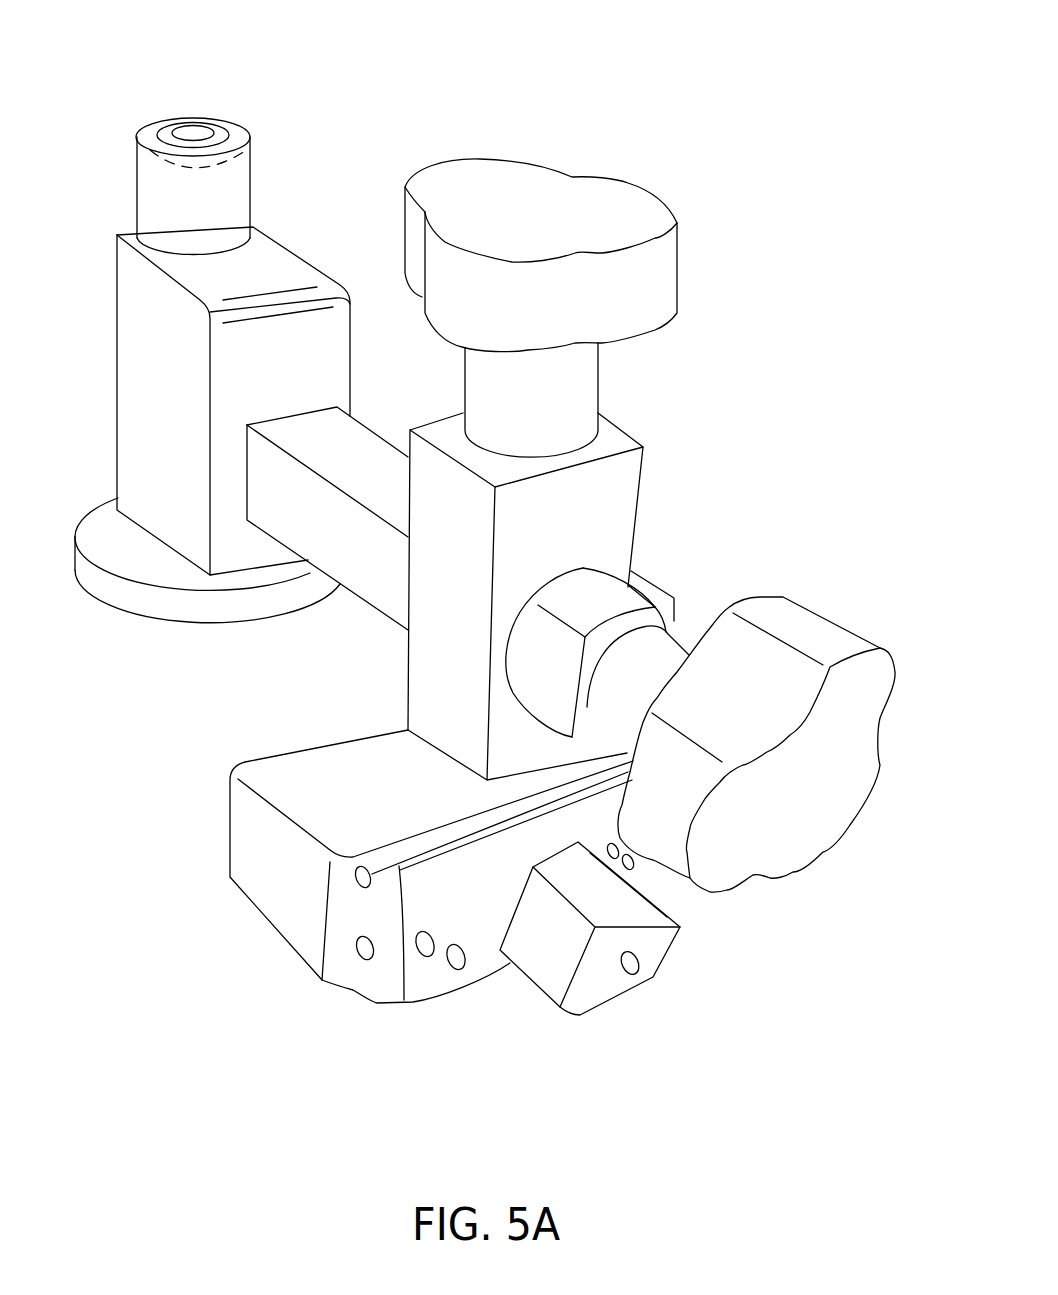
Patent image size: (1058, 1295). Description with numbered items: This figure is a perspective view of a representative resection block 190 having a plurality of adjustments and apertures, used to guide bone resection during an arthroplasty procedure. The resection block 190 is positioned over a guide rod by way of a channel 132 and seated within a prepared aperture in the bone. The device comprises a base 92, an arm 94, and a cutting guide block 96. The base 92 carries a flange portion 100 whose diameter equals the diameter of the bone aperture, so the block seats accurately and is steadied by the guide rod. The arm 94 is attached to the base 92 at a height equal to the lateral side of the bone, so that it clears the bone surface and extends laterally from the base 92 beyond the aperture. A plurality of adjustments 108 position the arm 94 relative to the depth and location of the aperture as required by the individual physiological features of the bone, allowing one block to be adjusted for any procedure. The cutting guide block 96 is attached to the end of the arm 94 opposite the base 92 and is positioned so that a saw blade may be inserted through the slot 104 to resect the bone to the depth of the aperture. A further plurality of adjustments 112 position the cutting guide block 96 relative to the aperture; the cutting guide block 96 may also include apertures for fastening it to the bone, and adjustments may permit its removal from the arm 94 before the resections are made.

The resection block 190 is at (728, 75).
The channel 132 is at (197, 130).
The base 92 is at (288, 270).
The flange portion 100 is at (100, 593).
The arm 94 is at (347, 580).
The adjustments 112 is at (675, 210).
The adjustments 108 is at (678, 320).
The cutting guide block 96 is at (232, 857).
The slot 104 is at (404, 1000).